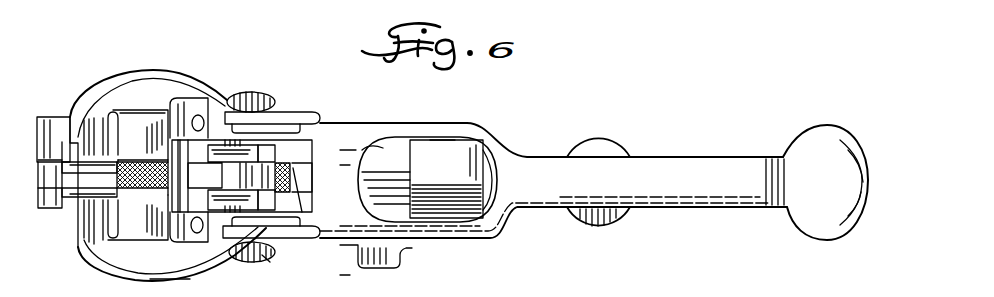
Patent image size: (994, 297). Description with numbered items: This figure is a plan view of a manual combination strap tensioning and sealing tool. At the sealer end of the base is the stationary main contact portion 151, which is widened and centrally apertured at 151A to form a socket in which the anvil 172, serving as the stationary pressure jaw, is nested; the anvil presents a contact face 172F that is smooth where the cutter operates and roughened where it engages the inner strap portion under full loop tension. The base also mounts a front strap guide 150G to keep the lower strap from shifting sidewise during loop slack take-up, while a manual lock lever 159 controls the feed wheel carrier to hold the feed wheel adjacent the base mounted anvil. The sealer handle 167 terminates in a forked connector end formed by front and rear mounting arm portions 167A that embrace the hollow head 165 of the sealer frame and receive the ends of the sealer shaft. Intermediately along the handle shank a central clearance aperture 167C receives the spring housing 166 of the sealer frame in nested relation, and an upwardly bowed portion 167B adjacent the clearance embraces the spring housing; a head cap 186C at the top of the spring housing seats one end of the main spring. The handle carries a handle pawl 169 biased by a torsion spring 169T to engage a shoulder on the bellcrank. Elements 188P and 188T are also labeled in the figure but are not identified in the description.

The front strap guide 150G is at (43, 114).
The main contact portion 151 is at (107, 76).
The central aperture (base socket) 151A is at (116, 114).
The contact face 172F is at (107, 168).
The anvil (stationary pressure jaw) 172 is at (136, 220).
The mounting arm portions 167A is at (288, 114).
The handle pawl 169 is at (290, 165).
The torsion spring 169T is at (292, 200).
The sealer handle 167 is at (521, 213).
The upwardly bowed portion 167B is at (338, 152).
The spring housing 166 is at (427, 179).
The head cap 186C is at (451, 179).
The central clearance aperture 167C is at (438, 140).
The manual lock lever 159 is at (412, 270).
The pin 188P is at (170, 288).
The hollow head 165 is at (279, 276).
The tab 188T is at (363, 286).